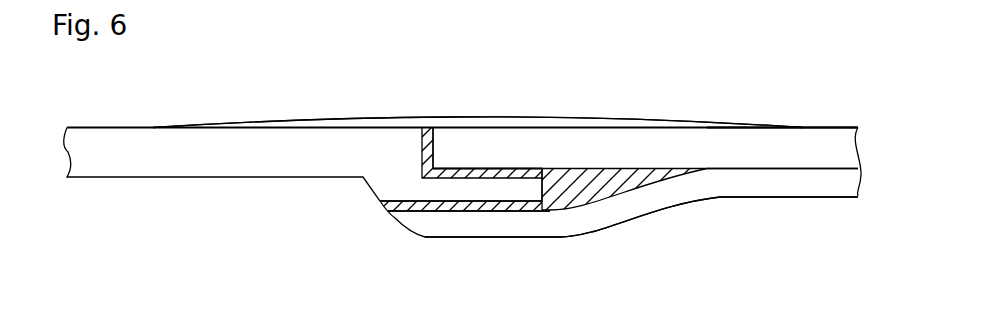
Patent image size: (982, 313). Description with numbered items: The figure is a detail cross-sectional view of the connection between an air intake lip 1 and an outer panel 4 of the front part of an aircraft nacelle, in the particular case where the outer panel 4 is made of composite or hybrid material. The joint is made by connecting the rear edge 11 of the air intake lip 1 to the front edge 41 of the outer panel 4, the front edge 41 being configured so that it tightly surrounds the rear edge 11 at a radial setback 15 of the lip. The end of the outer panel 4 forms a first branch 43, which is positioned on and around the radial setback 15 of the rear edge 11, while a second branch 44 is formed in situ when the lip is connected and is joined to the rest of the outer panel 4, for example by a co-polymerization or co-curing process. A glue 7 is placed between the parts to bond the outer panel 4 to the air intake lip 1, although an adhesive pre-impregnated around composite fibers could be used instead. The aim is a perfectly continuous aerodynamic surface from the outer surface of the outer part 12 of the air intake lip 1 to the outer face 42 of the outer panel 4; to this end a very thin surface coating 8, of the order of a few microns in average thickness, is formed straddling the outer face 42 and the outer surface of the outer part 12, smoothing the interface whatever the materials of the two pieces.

The air intake lip 1 is at (213, 164).
The outer panel 4 is at (792, 153).
The glue 7 is at (423, 121).
The surface coating 8 is at (370, 120).
The rear edge 11 is at (447, 192).
The outer part 12 is at (124, 127).
The radial setback 15 is at (493, 192).
The front edge 41 is at (510, 150).
The outer face 42 is at (833, 128).
The first branch 43 is at (468, 150).
The second branch 44 is at (536, 222).